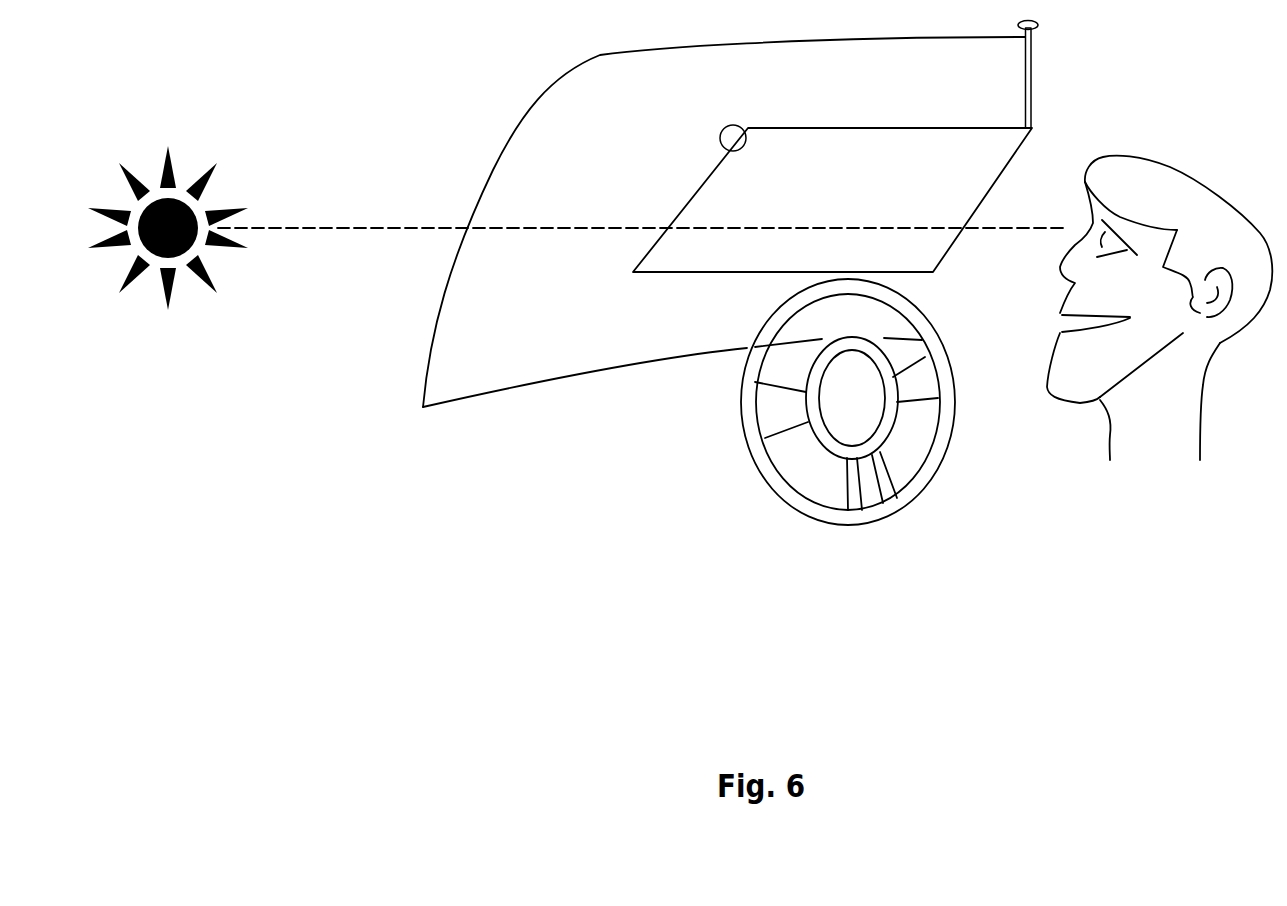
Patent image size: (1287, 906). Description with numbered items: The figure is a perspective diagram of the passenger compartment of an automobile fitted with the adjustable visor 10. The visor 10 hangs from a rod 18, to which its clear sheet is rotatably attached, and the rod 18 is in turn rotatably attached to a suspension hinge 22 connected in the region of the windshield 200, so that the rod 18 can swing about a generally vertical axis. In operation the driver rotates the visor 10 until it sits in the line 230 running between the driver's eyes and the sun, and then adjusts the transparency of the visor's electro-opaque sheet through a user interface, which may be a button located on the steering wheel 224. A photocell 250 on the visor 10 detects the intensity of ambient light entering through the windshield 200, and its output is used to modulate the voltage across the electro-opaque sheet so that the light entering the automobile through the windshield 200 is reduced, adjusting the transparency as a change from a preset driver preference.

The visor 10 is at (1035, 150).
The rod 18 is at (1037, 88).
The suspension hinge 22 is at (1036, 31).
The photocell 250 is at (726, 123).
The line 230 is at (997, 227).
The steering wheel 224 is at (922, 318).
The windshield 200 is at (545, 330).